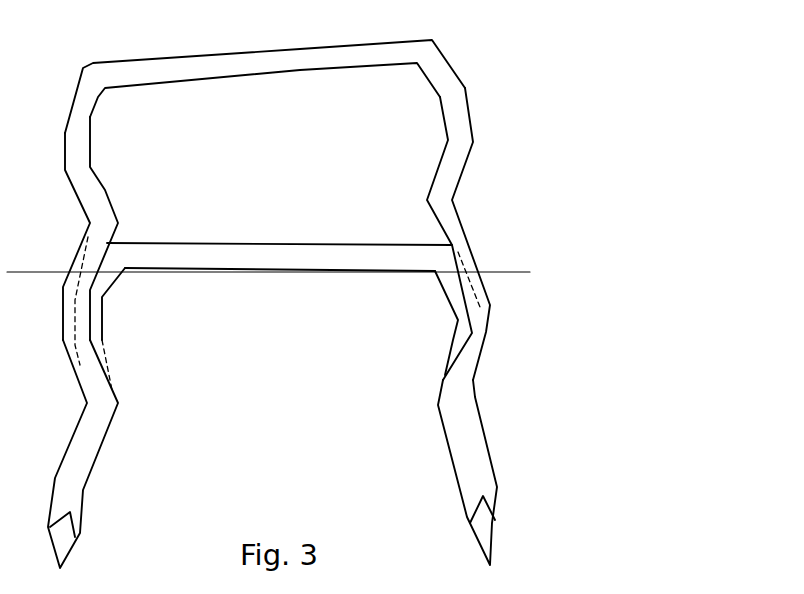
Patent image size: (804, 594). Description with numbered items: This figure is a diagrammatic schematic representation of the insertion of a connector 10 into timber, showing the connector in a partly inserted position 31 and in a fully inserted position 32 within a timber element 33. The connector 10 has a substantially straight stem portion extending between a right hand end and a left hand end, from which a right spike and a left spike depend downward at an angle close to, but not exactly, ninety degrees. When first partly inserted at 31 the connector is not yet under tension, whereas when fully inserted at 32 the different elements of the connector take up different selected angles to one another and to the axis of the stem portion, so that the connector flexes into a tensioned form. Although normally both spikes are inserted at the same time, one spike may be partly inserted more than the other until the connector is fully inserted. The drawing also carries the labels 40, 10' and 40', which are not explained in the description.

The connector 10 is at (348, 291).
The clamp strip 40 is at (348, 291).
The second fastening clip 10' is at (348, 454).
The second clamp strip 40' is at (348, 454).
The partly inserted position 31 is at (258, 40).
The fully inserted position 32 is at (217, 293).
The timber element 33 is at (282, 460).